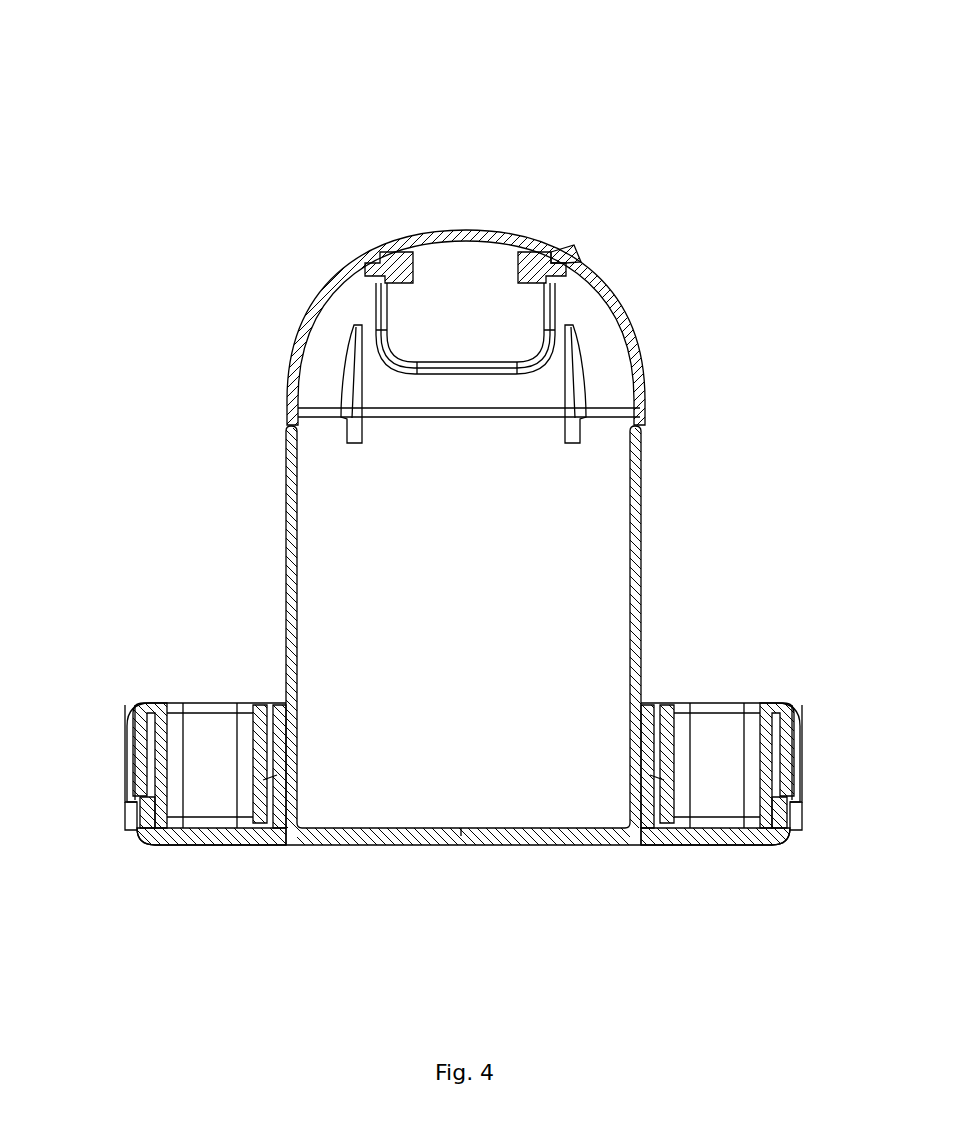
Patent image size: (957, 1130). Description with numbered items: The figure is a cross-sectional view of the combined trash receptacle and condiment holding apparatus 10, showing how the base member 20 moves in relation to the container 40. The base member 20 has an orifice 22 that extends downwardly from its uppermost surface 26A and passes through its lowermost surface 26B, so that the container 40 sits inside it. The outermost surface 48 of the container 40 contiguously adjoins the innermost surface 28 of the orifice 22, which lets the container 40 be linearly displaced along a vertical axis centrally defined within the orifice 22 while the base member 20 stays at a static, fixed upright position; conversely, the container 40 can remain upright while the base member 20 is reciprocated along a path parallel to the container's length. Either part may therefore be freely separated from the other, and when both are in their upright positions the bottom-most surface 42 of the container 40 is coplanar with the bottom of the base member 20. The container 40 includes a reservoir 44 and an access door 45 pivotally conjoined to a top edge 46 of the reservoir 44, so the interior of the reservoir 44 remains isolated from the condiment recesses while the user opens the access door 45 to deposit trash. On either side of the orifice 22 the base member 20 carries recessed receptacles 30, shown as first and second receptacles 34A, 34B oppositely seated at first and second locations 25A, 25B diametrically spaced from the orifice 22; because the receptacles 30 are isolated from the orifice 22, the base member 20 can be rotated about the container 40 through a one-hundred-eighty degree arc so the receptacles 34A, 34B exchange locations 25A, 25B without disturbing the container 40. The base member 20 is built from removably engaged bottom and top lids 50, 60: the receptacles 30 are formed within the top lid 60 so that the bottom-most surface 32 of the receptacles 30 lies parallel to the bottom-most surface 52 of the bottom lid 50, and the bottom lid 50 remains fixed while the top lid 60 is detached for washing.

The combined trash receptacle and condiment holding apparatus 10 is at (232, 62).
The base member 20 is at (143, 710).
The orifice 22 is at (457, 805).
The first location 25A is at (220, 703).
The second location 25B is at (685, 717).
The uppermost surface 26A is at (772, 705).
The lowermost surface 26B is at (760, 847).
The innermost surface 28 is at (282, 713).
The recessed receptacles 30 is at (207, 723).
The bottom-most surface of receptacles 32 is at (208, 833).
The first receptacle 34A is at (180, 710).
The second receptacle 34B is at (708, 722).
The container 40 is at (610, 507).
The bottom-most surface of container 42 is at (547, 837).
The reservoir 44 is at (345, 500).
The access door 45 is at (453, 230).
The top edge of reservoir 46 is at (625, 412).
The outermost surface of container 48 is at (637, 680).
The bottom lid 50 is at (133, 815).
The bottom-most surface of bottom lid 52 is at (245, 837).
The top lid 60 is at (137, 742).